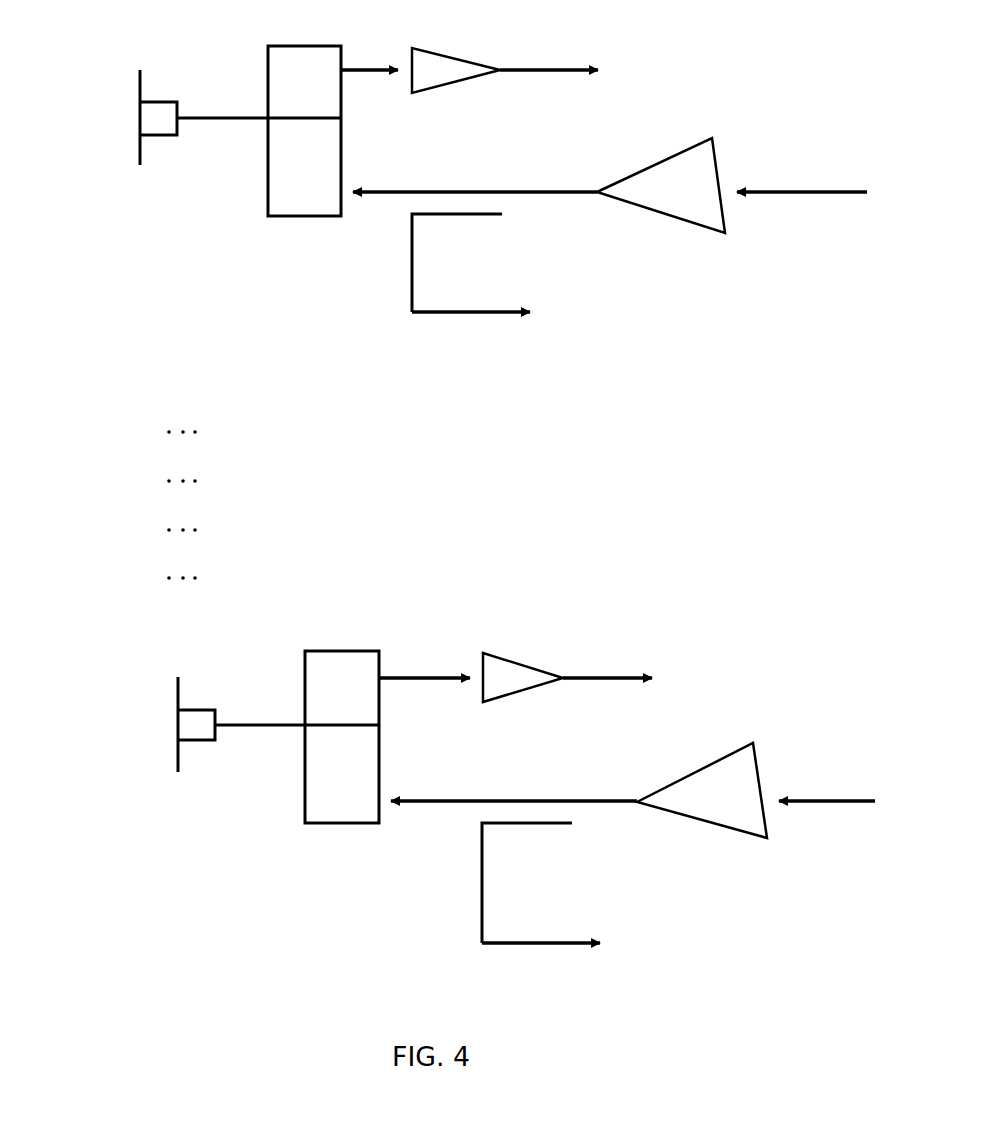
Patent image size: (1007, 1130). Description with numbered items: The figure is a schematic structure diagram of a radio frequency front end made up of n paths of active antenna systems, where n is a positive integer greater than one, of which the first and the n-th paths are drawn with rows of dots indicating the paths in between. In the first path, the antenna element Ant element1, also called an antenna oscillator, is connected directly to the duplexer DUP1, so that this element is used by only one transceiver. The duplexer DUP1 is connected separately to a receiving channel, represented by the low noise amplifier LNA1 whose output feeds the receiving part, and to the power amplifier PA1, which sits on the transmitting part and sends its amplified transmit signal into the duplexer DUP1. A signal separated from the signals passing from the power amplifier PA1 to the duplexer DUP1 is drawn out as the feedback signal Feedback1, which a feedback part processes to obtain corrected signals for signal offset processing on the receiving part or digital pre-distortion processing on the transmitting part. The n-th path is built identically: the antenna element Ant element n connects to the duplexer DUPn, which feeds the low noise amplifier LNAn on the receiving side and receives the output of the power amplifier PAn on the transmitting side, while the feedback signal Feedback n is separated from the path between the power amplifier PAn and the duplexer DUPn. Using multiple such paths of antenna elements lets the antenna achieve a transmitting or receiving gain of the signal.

The antenna element Ant element1 is at (144, 154).
The duplexer DUP1 is at (308, 167).
The low noise amplifier LNA1 is at (469, 56).
The power amplifier PA1 is at (610, 213).
The feedback signal Feedback1 is at (545, 288).
The antenna element Ant element n is at (181, 763).
The duplexer DUPn is at (345, 774).
The low noise amplifier LNAn is at (515, 665).
The power amplifier PAn is at (633, 832).
The feedback signal Feedback n is at (603, 907).